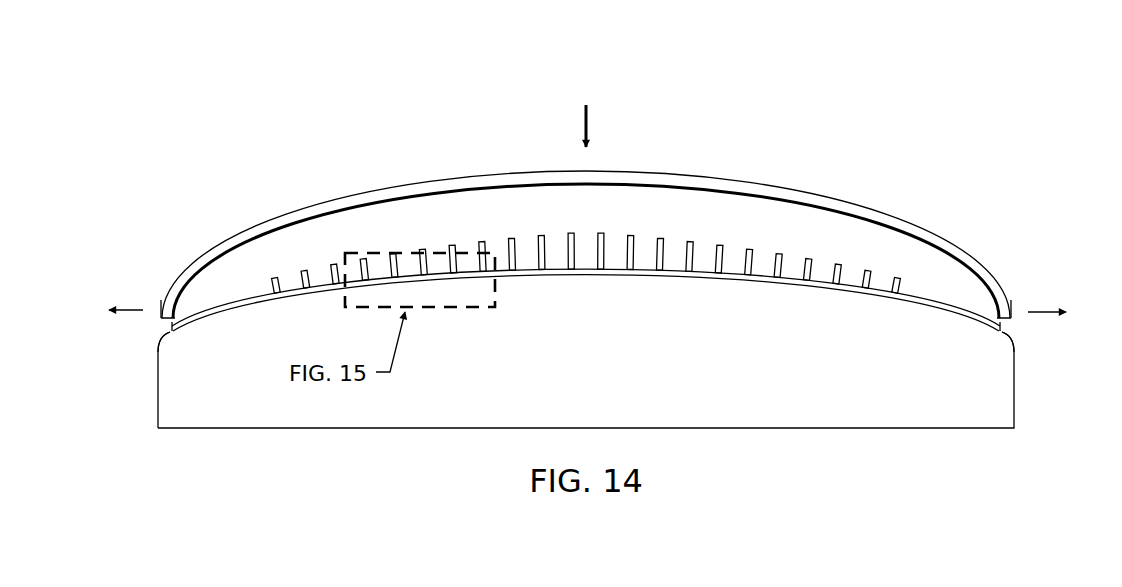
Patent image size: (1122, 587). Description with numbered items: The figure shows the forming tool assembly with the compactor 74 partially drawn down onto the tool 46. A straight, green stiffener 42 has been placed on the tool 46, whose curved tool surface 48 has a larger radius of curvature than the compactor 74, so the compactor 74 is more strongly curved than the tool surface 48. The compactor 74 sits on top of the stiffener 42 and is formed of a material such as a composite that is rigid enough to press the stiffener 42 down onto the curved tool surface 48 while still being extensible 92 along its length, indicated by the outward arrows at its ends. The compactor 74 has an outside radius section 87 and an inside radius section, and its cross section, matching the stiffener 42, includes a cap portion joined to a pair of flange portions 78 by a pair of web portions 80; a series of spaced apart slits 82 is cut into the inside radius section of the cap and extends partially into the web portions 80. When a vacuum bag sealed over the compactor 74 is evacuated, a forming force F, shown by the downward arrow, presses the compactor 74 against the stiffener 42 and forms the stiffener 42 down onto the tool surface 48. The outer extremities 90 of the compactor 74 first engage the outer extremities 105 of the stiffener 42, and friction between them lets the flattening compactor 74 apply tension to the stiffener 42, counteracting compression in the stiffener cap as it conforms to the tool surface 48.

The green stiffener 42 is at (946, 296).
The tool 46 is at (156, 384).
The tool surface 48 is at (160, 338).
The compactor 74 is at (322, 200).
The flange portions 78 is at (711, 197).
The web portions 80 is at (384, 212).
The slits 82 is at (540, 243).
The outside radius section 87 is at (655, 152).
The outer extremities of the compactor 90 is at (173, 257).
The extensible 92 is at (133, 310).
The outer extremities of the stiffener 105 is at (242, 284).